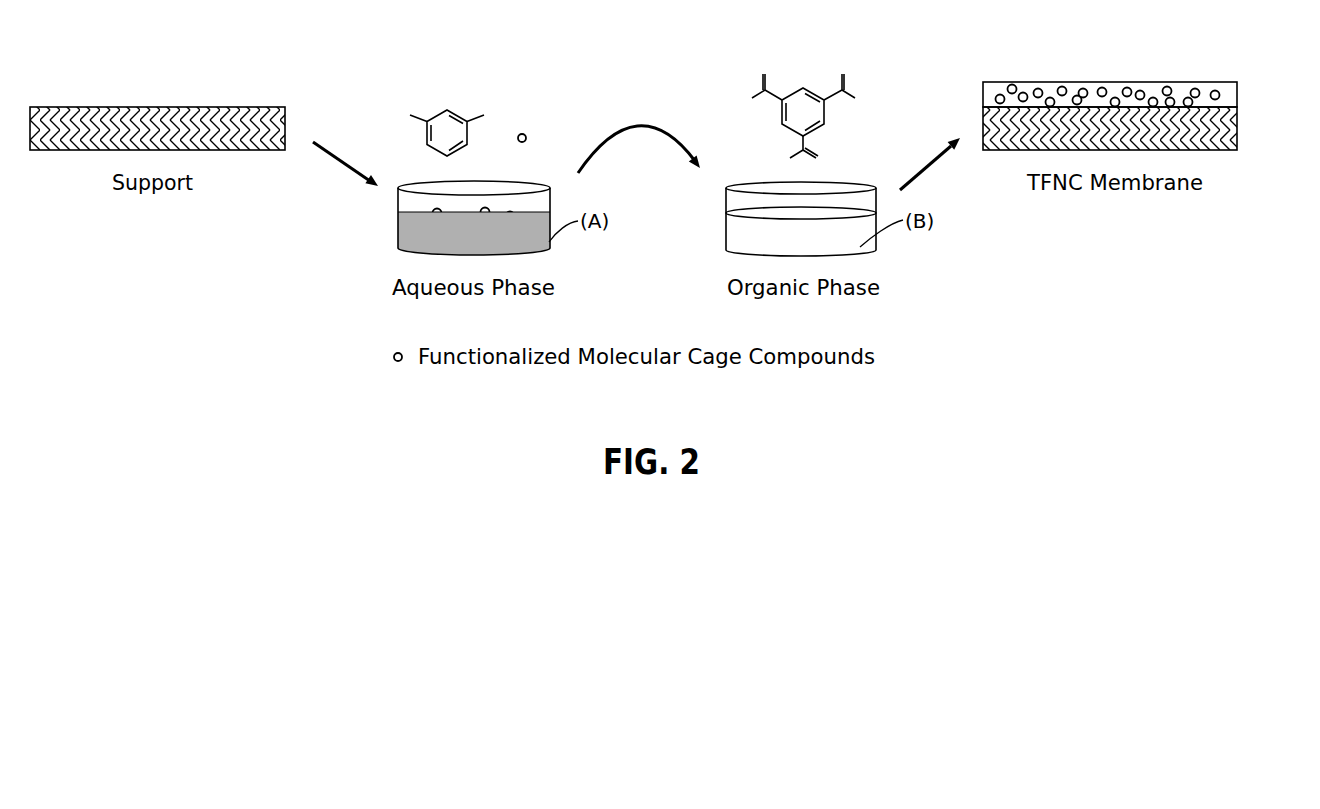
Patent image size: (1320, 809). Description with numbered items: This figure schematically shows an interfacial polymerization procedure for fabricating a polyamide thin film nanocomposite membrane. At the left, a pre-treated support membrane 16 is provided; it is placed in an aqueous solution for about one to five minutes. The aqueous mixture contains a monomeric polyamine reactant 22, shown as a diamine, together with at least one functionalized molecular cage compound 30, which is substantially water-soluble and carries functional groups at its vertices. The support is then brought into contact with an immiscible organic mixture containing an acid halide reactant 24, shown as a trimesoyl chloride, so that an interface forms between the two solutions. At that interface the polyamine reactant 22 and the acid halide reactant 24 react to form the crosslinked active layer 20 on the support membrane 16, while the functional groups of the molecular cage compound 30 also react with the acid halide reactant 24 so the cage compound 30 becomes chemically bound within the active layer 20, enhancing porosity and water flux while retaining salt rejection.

The support layer 16 is at (78, 106).
The active layer 20 is at (1231, 95).
The monomeric polyamine reactant 22 is at (447, 102).
The acid halide reactant 24 is at (806, 78).
The functionalized molecular cage compound 30 is at (535, 125).